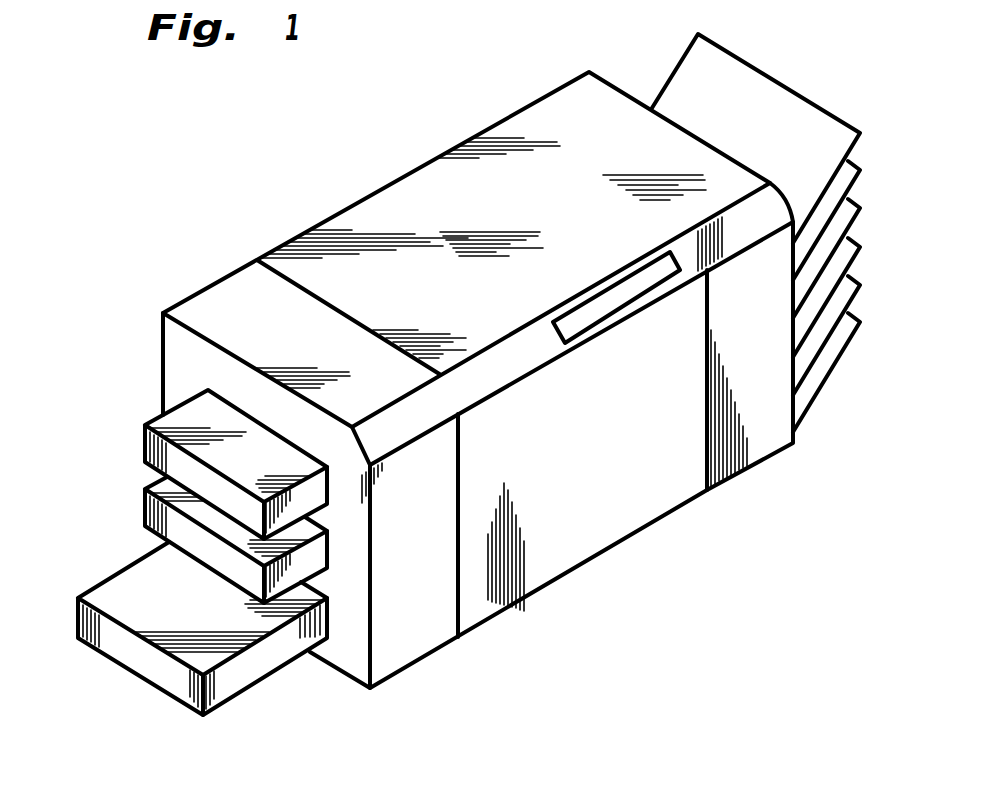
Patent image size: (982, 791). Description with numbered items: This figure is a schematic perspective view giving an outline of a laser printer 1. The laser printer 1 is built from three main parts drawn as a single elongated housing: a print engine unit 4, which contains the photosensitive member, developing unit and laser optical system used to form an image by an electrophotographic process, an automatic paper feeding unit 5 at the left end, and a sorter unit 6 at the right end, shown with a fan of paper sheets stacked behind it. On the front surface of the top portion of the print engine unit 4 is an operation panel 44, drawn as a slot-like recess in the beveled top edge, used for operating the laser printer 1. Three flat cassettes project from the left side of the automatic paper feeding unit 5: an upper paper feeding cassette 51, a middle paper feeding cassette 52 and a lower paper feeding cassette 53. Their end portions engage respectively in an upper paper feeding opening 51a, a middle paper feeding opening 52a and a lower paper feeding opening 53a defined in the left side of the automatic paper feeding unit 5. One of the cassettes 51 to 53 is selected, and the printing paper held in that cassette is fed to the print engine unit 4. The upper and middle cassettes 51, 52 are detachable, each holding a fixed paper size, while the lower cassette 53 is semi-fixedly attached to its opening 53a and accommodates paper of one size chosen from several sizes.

The laser printer 1 is at (311, 131).
The print engine unit 4 is at (602, 533).
The automatic paper feeding unit 5 is at (423, 650).
The sorter unit 6 is at (778, 433).
The operation panel 44 is at (627, 291).
The upper paper feeding cassette 51 is at (150, 447).
The middle paper feeding cassette 52 is at (150, 518).
The lower paper feeding cassette 53 is at (125, 587).
The upper paper feeding opening 51a is at (325, 482).
The middle paper feeding opening 52a is at (325, 547).
The lower paper feeding opening 53a is at (325, 615).